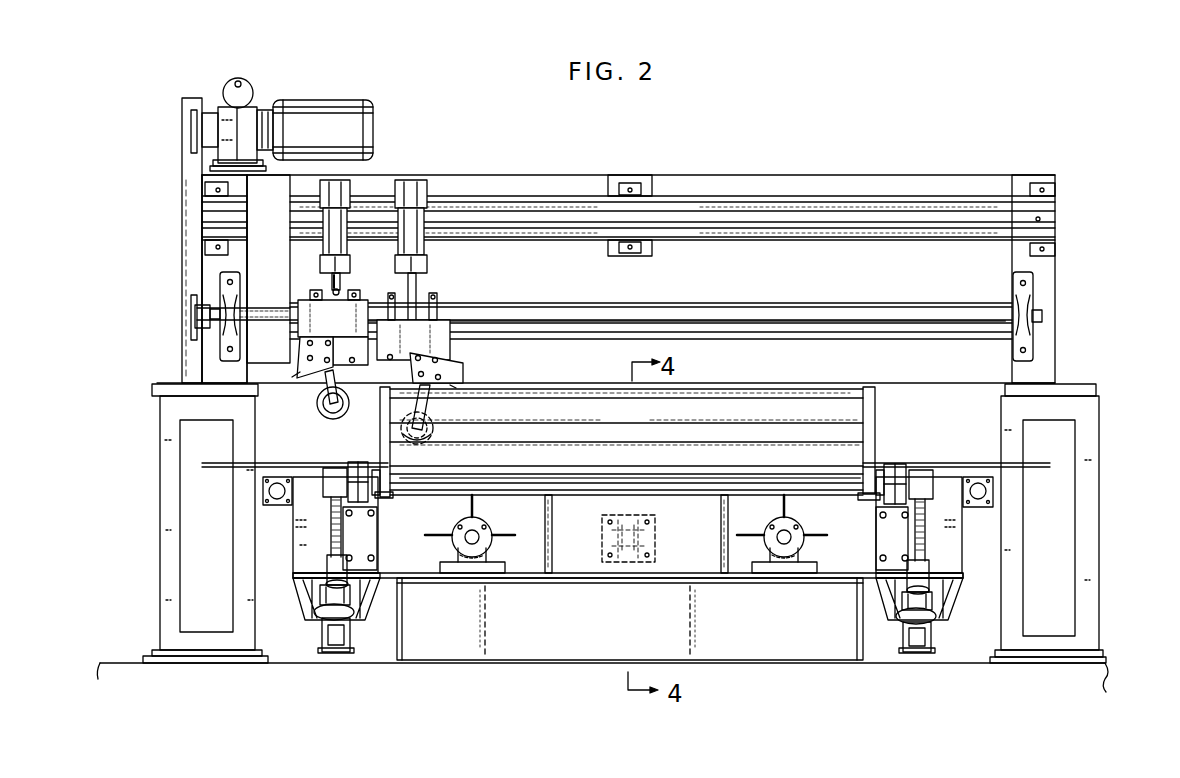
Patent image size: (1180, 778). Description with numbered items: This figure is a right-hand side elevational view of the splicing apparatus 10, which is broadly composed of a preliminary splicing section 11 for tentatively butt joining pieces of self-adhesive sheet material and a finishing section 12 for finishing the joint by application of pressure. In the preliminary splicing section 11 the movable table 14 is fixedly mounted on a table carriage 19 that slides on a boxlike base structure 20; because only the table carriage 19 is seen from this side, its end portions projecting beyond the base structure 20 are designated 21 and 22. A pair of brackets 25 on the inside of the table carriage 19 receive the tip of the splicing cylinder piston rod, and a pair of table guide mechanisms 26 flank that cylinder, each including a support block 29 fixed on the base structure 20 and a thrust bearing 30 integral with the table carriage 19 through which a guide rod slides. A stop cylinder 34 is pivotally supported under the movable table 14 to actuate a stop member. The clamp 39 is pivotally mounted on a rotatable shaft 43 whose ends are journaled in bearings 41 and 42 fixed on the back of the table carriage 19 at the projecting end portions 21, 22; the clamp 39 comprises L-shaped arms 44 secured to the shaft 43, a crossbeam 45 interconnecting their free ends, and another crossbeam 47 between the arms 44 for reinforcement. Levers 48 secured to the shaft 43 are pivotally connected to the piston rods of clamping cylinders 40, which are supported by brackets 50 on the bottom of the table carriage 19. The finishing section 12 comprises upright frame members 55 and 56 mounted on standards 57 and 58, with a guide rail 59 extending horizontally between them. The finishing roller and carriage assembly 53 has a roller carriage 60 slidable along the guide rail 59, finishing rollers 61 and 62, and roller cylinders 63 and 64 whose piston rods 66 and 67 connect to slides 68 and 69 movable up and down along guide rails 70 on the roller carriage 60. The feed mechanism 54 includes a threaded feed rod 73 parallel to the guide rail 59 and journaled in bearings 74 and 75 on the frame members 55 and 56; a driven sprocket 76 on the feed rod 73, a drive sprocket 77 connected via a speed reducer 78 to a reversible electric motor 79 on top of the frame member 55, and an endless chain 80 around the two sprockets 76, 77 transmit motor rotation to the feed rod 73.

The splicing apparatus 10 is at (657, 154).
The preliminary splicing section 11 is at (150, 504).
The finishing section 12 is at (180, 222).
The movable table 14 is at (514, 458).
The table carriage 19 is at (558, 562).
The base structure 20 is at (438, 647).
The projecting end portion 21 is at (300, 557).
The projecting end portion 22 is at (958, 558).
The brackets 25 is at (630, 512).
The table guide mechanism 26 is at (443, 515).
The support block 29 is at (455, 557).
The thrust bearing 30 is at (480, 522).
The stop cylinder 34 is at (266, 491).
The clamp 39 is at (882, 389).
The clamping cylinders 40 is at (338, 641).
The bearing 41 is at (355, 463).
The bearing 42 is at (897, 468).
The rotatable shaft 43 is at (700, 482).
The L-shaped arms 44 is at (388, 393).
The crossbeam 45 is at (767, 388).
The crossbeam 47 is at (667, 425).
The levers 48 is at (334, 503).
The brackets 50 is at (306, 580).
The finishing roller and carriage assembly 53 is at (498, 268).
The feed mechanism 54 is at (187, 335).
The upright frame member 55 is at (208, 262).
The upright frame member 56 is at (1050, 259).
The standard 57 is at (160, 599).
The standard 58 is at (1090, 518).
The guide rail 59 is at (910, 220).
The roller carriage 60 is at (447, 181).
The finishing roller 61 is at (431, 416).
The finishing roller 62 is at (317, 401).
The roller cylinder 63 is at (481, 193).
The roller cylinder 64 is at (347, 223).
The piston rod 66 is at (426, 263).
The piston rod 67 is at (320, 255).
The slide 68 is at (440, 333).
The slide 69 is at (355, 305).
The guide rails 70 is at (312, 295).
The feed rod 73 is at (757, 310).
The bearing 74 is at (228, 348).
The bearing 75 is at (1033, 288).
The driven sprocket 76 is at (195, 312).
The drive sprocket 77 is at (190, 122).
The speed reducer 78 is at (257, 105).
The reversible electric motor 79 is at (311, 105).
The endless chain 80 is at (185, 176).